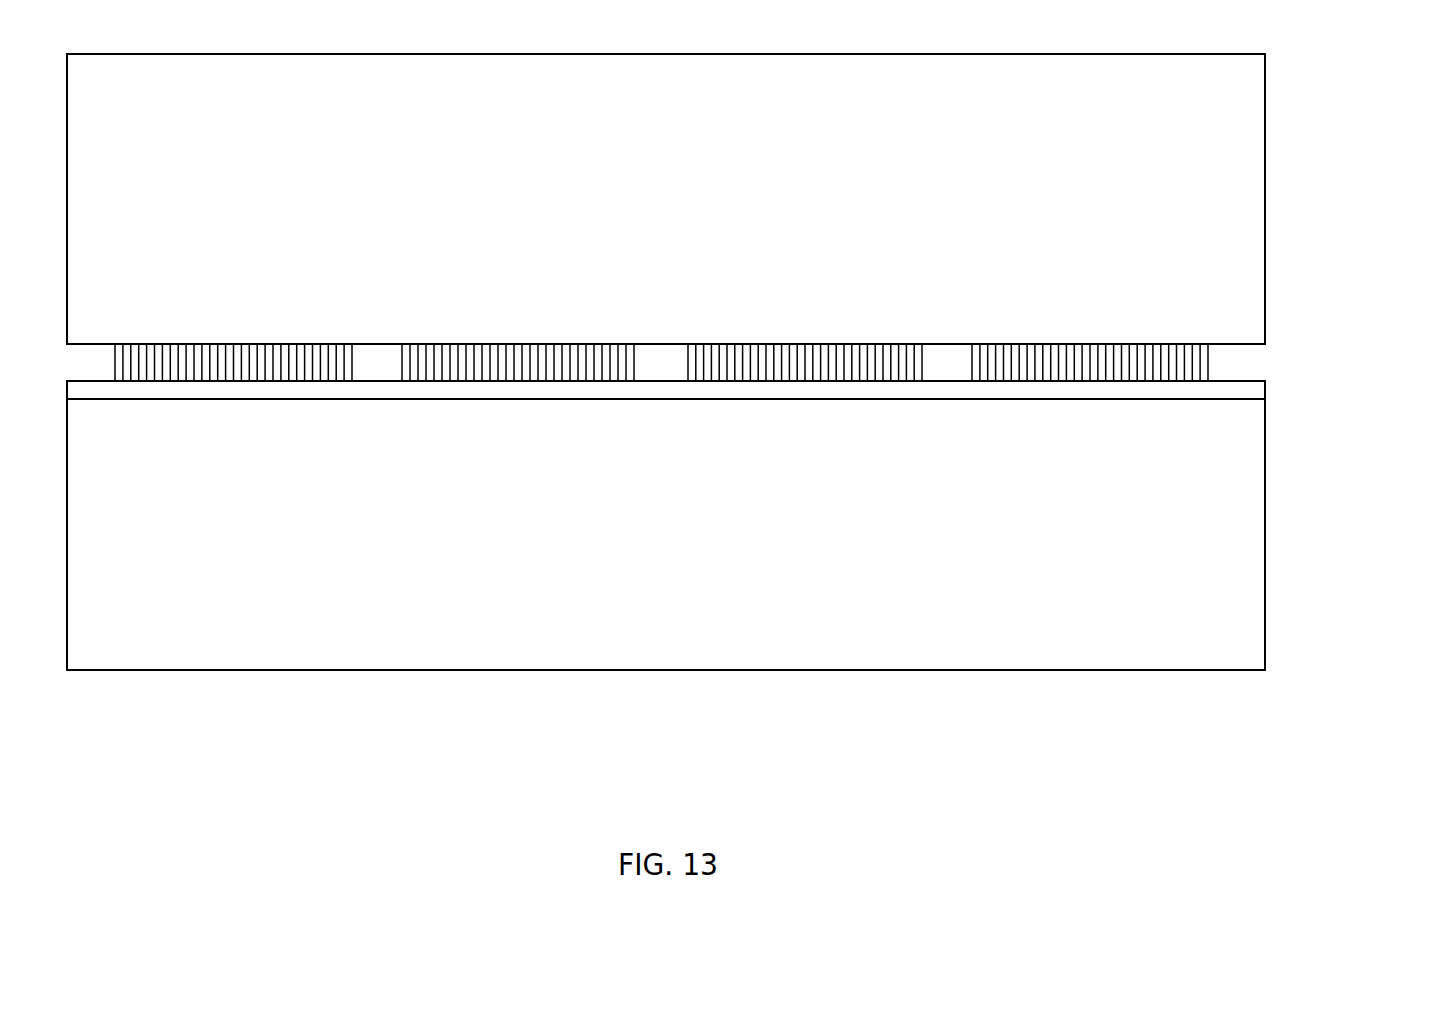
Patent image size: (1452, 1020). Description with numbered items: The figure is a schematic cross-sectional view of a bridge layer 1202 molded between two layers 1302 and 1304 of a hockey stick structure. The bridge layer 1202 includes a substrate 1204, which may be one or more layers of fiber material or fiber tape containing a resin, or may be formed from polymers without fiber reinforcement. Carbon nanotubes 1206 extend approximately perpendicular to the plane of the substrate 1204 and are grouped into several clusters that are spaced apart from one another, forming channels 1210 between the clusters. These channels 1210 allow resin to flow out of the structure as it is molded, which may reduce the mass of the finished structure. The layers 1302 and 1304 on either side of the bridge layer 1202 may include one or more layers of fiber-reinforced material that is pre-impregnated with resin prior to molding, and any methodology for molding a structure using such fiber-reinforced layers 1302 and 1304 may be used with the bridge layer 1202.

The bridge layer 1202 is at (1277, 353).
The substrate 1204 is at (1212, 391).
The carbon nanotubes 1206 is at (1048, 372).
The channels 1210 is at (950, 358).
The layer 1302 is at (1018, 590).
The layer 1304 is at (1078, 105).